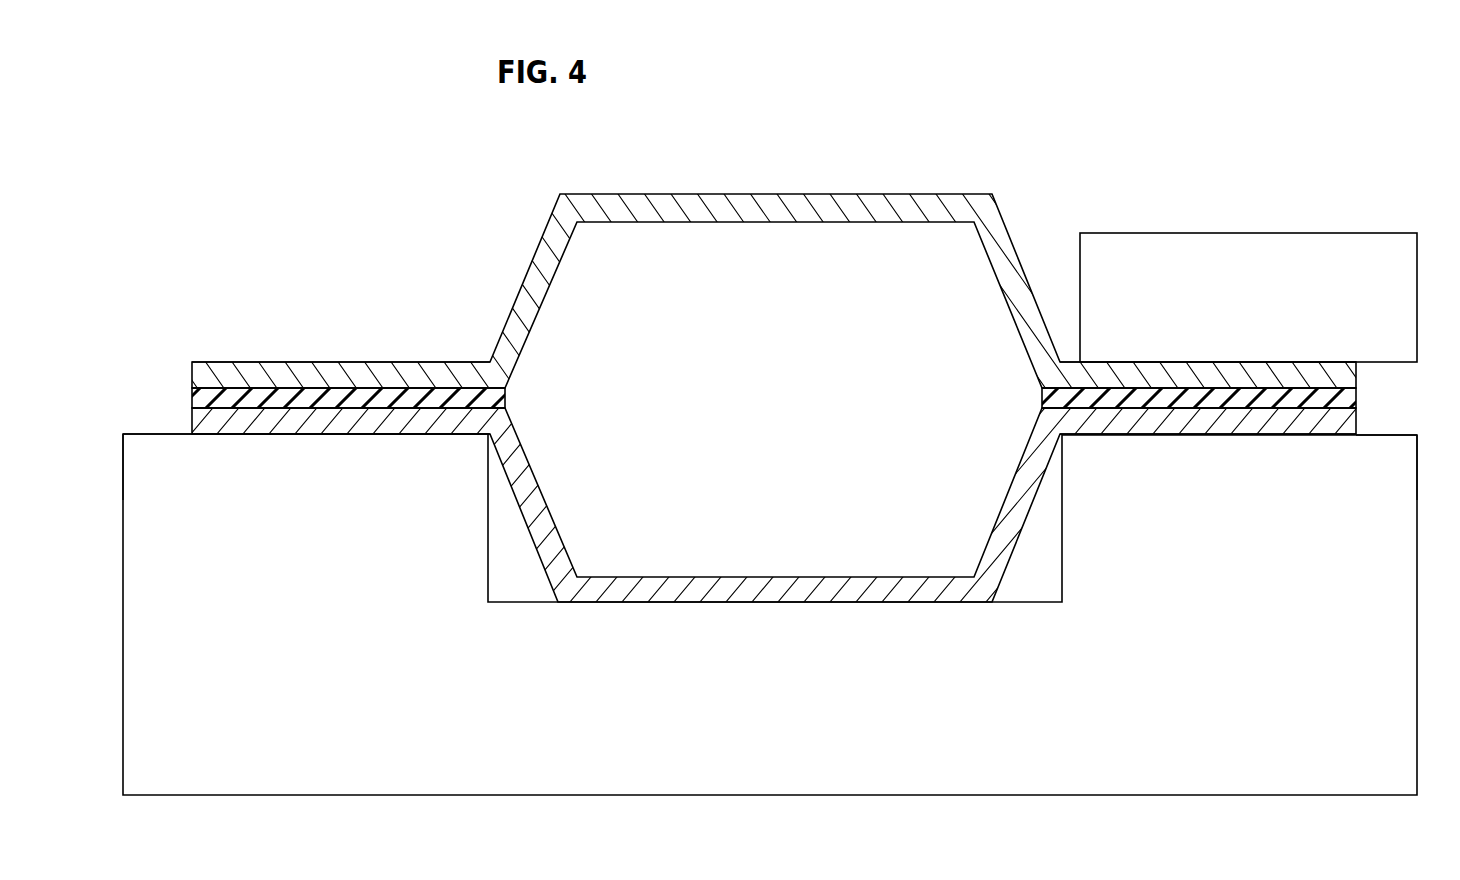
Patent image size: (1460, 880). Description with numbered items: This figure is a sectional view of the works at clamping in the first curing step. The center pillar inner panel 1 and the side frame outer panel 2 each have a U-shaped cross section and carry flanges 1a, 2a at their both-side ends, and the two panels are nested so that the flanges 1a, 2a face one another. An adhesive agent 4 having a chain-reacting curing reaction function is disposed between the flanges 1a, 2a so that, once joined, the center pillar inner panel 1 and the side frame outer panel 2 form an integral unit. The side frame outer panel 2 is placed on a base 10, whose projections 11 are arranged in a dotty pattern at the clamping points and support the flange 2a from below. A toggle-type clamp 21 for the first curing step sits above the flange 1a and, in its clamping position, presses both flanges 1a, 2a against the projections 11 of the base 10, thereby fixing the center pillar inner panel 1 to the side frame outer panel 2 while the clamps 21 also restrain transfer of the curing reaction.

The center pillar inner panel 1 is at (883, 194).
The flange 1a is at (398, 362).
The side frame outer panel 2 is at (740, 577).
The flange 2a is at (400, 433).
The adhesive agent 4 is at (313, 385).
The base 10 is at (755, 795).
The projection 11 is at (165, 450).
The toggle-type clamp 21 is at (1233, 232).